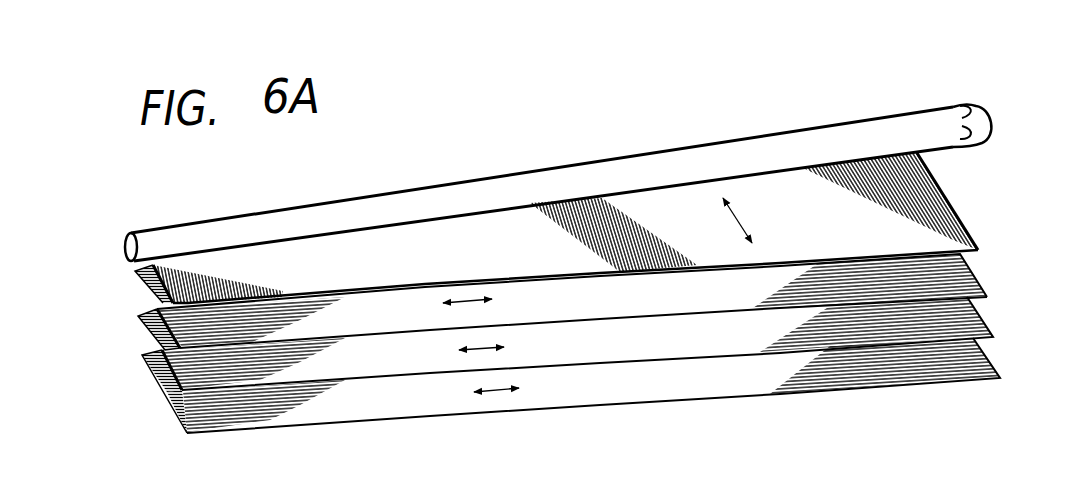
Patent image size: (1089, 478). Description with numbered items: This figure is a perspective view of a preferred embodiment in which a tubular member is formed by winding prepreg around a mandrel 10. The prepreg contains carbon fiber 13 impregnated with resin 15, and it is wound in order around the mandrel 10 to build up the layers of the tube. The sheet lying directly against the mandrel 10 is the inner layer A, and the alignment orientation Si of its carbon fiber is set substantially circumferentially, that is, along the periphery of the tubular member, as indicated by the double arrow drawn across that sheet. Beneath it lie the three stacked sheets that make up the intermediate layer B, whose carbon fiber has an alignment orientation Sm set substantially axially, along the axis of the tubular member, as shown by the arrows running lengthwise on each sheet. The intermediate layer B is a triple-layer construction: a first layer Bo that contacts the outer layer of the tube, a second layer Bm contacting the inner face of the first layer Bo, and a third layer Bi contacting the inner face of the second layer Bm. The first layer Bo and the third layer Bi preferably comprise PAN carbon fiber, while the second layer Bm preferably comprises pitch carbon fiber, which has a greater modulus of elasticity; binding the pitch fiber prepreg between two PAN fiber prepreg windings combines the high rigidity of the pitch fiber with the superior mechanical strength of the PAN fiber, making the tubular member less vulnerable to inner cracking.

The mandrel 10 is at (995, 119).
The inner layer A is at (572, 303).
The carbon fiber 13 is at (962, 222).
The resin 15 is at (933, 249).
The intermediate layer B is at (611, 343).
The third layer Bi is at (987, 275).
The second layer Bm is at (982, 312).
The first layer Bo is at (607, 380).
The alignment orientation of the carbon fiber of the inner layer Si is at (746, 220).
The alignment orientation of the carbon fiber of the intermediate layer Sm is at (506, 344).